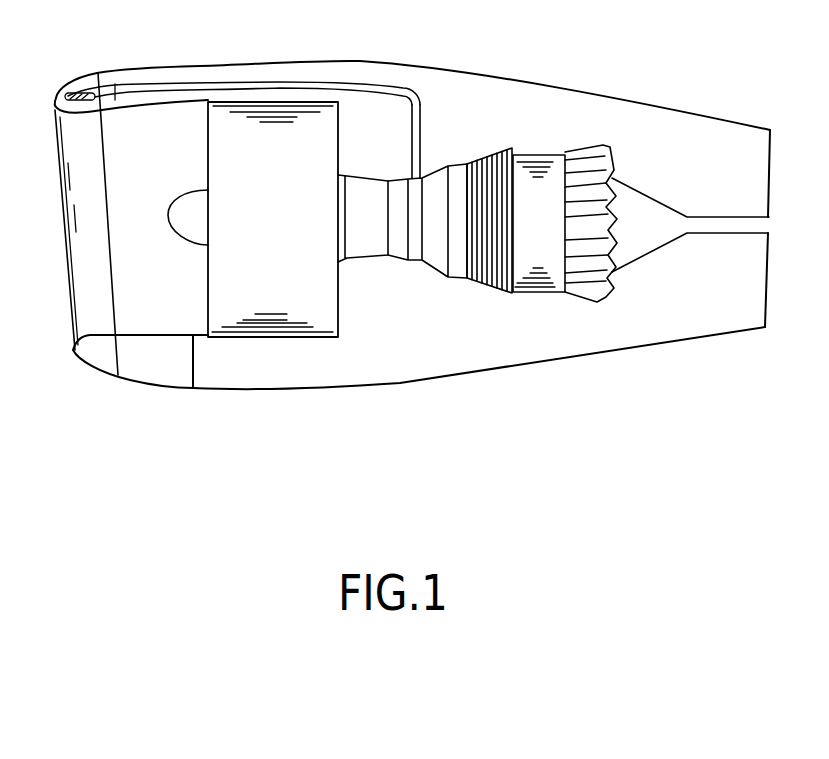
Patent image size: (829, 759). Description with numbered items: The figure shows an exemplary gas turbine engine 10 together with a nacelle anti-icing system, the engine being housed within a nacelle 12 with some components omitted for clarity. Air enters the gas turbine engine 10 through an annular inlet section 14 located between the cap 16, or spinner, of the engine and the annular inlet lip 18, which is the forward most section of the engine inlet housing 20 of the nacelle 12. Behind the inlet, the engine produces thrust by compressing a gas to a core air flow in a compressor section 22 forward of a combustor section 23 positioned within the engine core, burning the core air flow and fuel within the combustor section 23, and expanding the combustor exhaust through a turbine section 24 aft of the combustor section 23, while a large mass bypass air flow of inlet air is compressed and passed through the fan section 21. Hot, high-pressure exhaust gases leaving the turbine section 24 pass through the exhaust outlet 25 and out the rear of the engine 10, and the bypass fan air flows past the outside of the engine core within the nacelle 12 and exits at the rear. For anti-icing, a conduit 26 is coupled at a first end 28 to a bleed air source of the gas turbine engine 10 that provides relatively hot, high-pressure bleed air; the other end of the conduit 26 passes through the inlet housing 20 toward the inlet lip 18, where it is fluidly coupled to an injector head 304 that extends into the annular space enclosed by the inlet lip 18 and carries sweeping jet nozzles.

The gas turbine engine 10 is at (420, 57).
The nacelle 12 is at (581, 361).
The annular inlet section 14 is at (125, 181).
The cap 16 is at (190, 240).
The annular inlet lip 18 is at (82, 361).
The engine inlet housing 20 is at (143, 67).
The fan section 21 is at (243, 313).
The compressor section 22 is at (353, 293).
The combustor section 23 is at (417, 243).
The turbine section 24 is at (497, 313).
The exhaust outlet 25 is at (642, 292).
The conduit 26 is at (250, 84).
The first end 28 is at (423, 148).
The injector head 304 is at (90, 91).